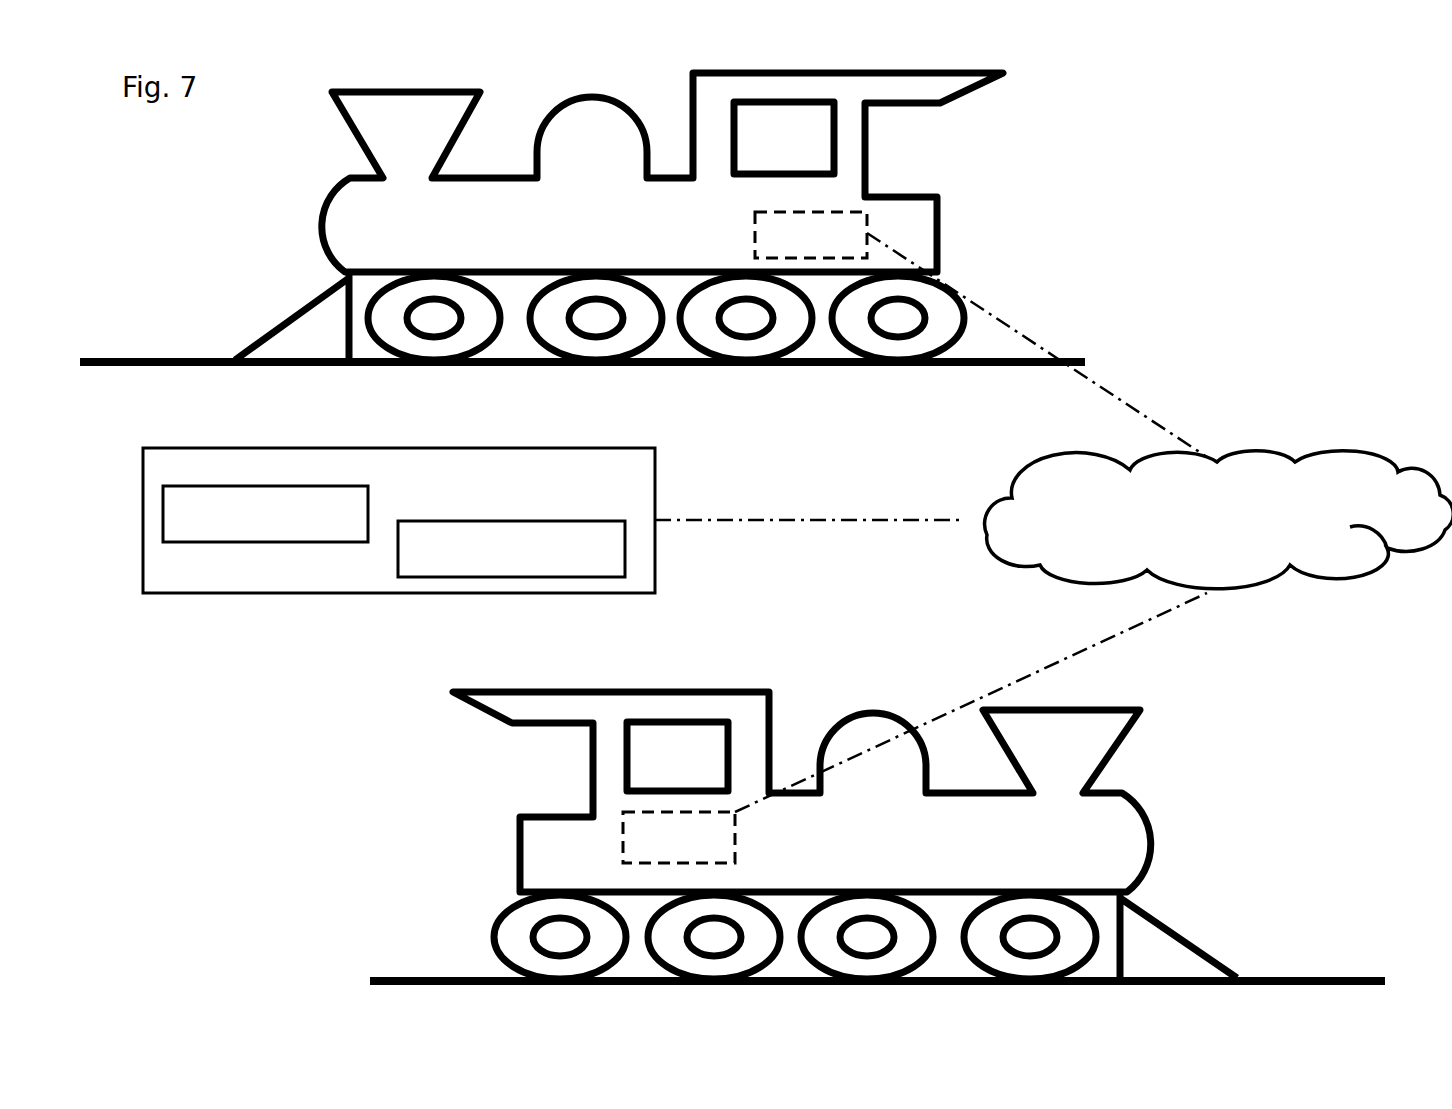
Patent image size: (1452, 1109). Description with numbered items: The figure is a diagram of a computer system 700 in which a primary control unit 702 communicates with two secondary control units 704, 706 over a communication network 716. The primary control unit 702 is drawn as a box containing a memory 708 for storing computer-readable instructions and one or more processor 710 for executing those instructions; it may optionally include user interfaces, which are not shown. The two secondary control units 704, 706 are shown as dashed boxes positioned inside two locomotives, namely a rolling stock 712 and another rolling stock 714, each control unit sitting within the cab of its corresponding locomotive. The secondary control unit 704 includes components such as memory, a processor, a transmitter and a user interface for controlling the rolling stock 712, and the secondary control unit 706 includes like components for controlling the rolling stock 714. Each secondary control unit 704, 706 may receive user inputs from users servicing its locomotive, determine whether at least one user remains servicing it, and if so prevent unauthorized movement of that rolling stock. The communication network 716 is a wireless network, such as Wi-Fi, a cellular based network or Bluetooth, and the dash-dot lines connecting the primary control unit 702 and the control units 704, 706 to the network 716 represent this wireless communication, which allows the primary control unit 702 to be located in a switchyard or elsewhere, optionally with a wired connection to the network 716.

The computer system 700 is at (1072, 125).
The primary control unit 702 is at (471, 556).
The secondary control unit 704 is at (753, 222).
The secondary control unit 706 is at (735, 835).
The memory 708 is at (290, 542).
The processor 710 is at (415, 577).
The rolling stock 712 is at (315, 215).
The rolling stock 714 is at (520, 850).
The communication network 716 is at (987, 560).